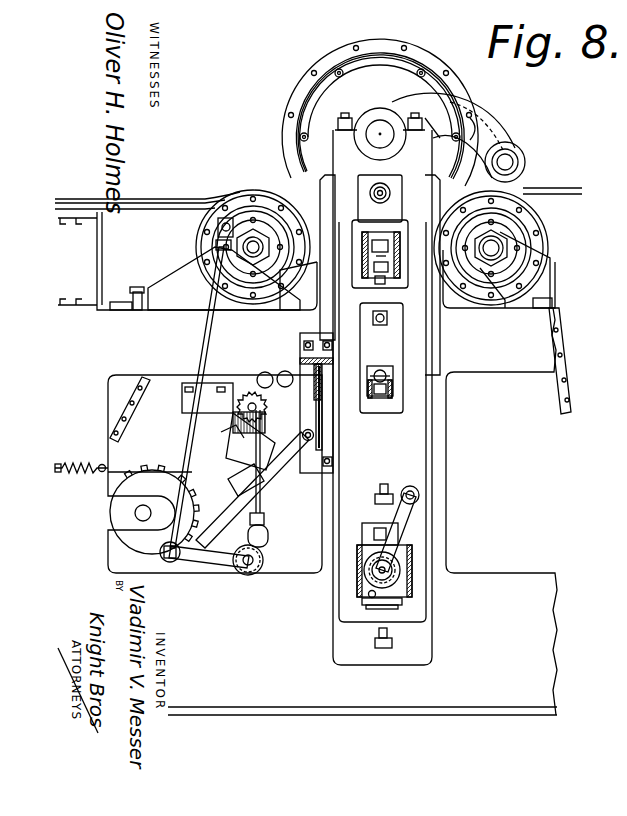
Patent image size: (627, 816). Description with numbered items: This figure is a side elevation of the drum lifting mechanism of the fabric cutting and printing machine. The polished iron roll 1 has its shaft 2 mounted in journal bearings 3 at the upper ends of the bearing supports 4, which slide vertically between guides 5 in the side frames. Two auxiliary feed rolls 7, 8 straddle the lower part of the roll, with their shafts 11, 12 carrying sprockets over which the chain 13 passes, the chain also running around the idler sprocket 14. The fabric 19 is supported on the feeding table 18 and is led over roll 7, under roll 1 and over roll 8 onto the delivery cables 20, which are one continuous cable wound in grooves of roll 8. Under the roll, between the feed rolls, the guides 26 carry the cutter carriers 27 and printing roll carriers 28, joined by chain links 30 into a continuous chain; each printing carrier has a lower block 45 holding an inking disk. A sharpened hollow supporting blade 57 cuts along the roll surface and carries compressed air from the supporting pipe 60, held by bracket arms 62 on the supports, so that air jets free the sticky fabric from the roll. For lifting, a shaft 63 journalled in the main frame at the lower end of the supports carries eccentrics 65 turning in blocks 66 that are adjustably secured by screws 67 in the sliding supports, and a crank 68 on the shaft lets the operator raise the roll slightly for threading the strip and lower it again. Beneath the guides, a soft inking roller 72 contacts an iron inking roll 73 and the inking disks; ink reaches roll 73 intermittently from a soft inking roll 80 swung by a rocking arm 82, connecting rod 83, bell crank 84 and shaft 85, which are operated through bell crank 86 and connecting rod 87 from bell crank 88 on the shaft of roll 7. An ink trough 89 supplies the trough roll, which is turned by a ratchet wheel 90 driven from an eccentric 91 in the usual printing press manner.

The iron cylinder or roll 1 is at (336, 58).
The shaft 2 is at (370, 126).
The journal bearings 3 is at (381, 109).
The bearing supports 4 is at (432, 439).
The guides 5 is at (320, 496).
The auxiliary feed roll 7 is at (200, 225).
The auxiliary feed roll 8 is at (550, 246).
The shaft 11 is at (228, 256).
The shaft 12 is at (495, 256).
The chain 13 is at (116, 414).
The idler sprocket 14 is at (127, 508).
The feeding table 18 is at (134, 207).
The fabric 19 is at (210, 176).
The cables 20 is at (556, 306).
The guides 26 is at (362, 266).
The cutter carriers 27 is at (368, 234).
The printing roll carriers 28 is at (398, 392).
The chain links 30 is at (382, 402).
The lower block 45 is at (376, 272).
The supporting blade 57 is at (487, 130).
The supporting pipe 60 is at (526, 160).
The bracket arms 62 is at (490, 118).
The shaft 63 is at (394, 570).
The eccentrics 65 is at (392, 598).
The blocks 66 is at (386, 604).
The screws 67 is at (383, 486).
The crank 68 is at (408, 520).
The inking roller 72 is at (390, 266).
The iron inking roll 73 is at (390, 320).
The soft inking roll 80 is at (262, 378).
The rocking arm 82 is at (296, 382).
The connecting rod 83 is at (252, 509).
The bell crank 84 is at (226, 566).
The shaft 85 is at (252, 570).
The bell crank 86 is at (185, 560).
The connecting rod 87 is at (204, 343).
The bell crank 88 is at (238, 236).
The ink trough 89 is at (254, 430).
The ratchet wheel 90 is at (238, 407).
The eccentric 91 is at (270, 545).